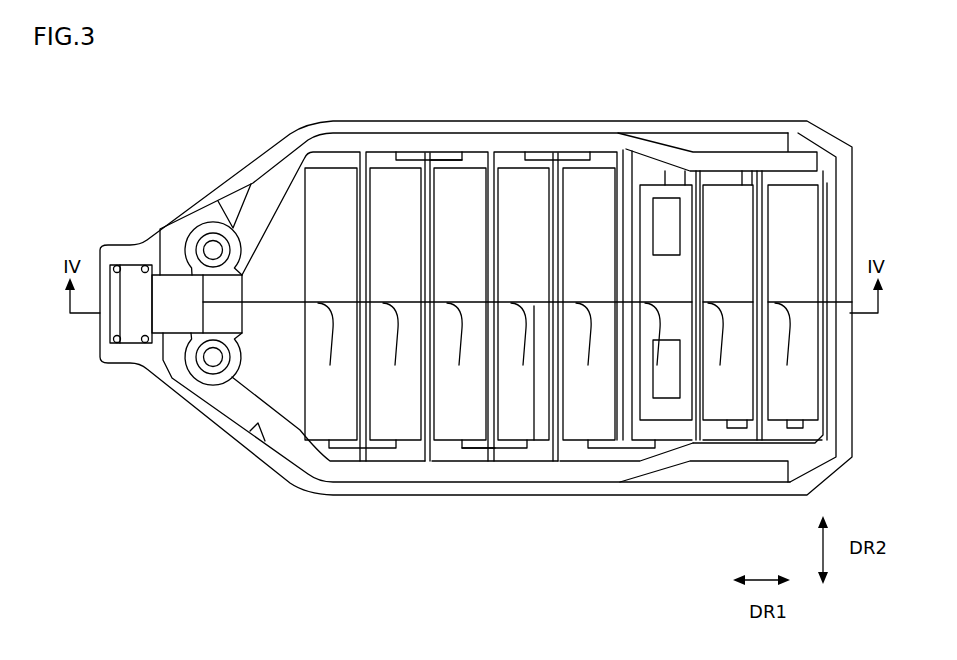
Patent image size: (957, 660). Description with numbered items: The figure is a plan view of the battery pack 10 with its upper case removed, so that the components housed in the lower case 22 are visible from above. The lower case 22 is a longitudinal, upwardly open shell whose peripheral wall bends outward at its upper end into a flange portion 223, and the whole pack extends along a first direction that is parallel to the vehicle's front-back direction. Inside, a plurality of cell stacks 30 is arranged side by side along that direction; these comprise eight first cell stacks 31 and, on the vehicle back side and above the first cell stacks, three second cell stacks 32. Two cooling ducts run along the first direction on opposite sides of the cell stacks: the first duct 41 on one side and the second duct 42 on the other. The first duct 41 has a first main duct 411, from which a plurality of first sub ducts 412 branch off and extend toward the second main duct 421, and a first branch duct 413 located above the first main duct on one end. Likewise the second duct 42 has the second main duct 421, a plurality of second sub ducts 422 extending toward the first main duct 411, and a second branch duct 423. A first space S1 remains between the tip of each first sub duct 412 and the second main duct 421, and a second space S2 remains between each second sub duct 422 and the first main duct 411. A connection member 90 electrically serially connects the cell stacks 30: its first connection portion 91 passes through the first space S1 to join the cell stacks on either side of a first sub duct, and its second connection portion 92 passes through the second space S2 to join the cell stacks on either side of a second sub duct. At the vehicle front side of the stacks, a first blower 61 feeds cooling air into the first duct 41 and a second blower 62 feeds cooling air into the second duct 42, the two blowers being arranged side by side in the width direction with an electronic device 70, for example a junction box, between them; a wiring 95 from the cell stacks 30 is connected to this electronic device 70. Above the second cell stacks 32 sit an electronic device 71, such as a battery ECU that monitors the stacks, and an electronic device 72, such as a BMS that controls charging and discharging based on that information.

The battery pack 10 is at (847, 93).
The lower case 22 is at (475, 357).
The flange portion 223 is at (338, 490).
The cell stack 30 is at (567, 238).
The first cell stack 31 is at (332, 167).
The second cell stack 32 is at (810, 183).
The first duct 41 is at (580, 472).
The first main duct 411 is at (718, 474).
The first sub duct 412 is at (416, 452).
The first branch duct 413 is at (763, 452).
The second duct 42 is at (578, 133).
The second main duct 421 is at (718, 146).
The second sub duct 422 is at (513, 152).
The second branch duct 423 is at (765, 165).
The first blower 61 is at (213, 367).
The second blower 62 is at (213, 240).
The electronic device 70 is at (173, 293).
The electronic device 71 is at (665, 184).
The electronic device 72 is at (668, 400).
The connection member 90 is at (492, 309).
The first connection portion 91 is at (403, 158).
The second connection portion 92 is at (500, 449).
The wiring 95 is at (534, 440).
The first space S1 is at (437, 162).
The second space S2 is at (481, 447).